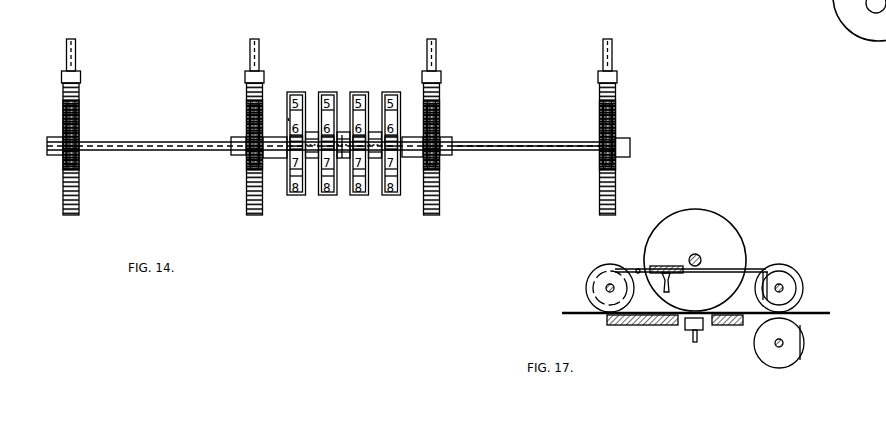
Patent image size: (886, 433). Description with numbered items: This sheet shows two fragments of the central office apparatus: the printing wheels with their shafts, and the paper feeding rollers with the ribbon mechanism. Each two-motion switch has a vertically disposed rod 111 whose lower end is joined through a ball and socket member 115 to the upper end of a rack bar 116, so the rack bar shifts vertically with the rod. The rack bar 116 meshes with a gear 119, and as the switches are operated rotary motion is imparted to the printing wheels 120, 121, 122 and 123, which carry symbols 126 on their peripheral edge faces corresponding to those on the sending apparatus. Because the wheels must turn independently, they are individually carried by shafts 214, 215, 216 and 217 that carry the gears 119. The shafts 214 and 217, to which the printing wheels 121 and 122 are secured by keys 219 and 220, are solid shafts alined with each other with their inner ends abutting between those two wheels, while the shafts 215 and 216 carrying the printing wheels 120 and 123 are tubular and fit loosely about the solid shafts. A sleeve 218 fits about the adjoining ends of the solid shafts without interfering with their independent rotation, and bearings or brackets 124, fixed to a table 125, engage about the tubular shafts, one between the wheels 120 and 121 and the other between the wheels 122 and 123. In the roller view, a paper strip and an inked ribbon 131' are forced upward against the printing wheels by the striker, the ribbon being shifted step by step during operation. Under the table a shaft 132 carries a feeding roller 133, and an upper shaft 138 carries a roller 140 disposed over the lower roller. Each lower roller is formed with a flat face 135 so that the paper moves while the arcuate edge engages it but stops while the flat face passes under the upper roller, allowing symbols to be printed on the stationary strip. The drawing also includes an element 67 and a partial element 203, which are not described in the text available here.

In FIG. 14, the vertically disposed rod 111 is at (76, 52).
In FIG. 14, the ball and socket member 115 is at (61, 77).
In FIG. 14, the rack bar 116 is at (63, 190).
In FIG. 14, the gear 119 is at (79, 116).
In FIG. 14, the printing wheel 120 is at (293, 92).
In FIG. 14, the printing wheel 121 is at (329, 92).
In FIG. 14, the printing wheel 122 is at (360, 92).
In FIG. 14, the printing wheel 123 is at (392, 92).
In FIG. 17, the printing wheel 123 is at (728, 222).
In FIG. 14, the bracket 124 is at (311, 133).
In FIG. 14, the symbols 126 is at (290, 118).
In FIG. 14, the solid shaft 214 is at (166, 147).
In FIG. 14, the tubular shaft 215 is at (290, 151).
In FIG. 14, the tubular shaft 216 is at (430, 150).
In FIG. 14, the solid shaft 217 is at (512, 148).
In FIG. 14, the sleeve 218 is at (342, 140).
In FIG. 14, the key 219 is at (323, 135).
In FIG. 14, the key 220 is at (366, 150).
In FIG. 17, the tape 67 is at (782, 266).
In FIG. 17, the table 125 is at (660, 328).
In FIG. 17, the inked ribbon 131' is at (696, 307).
In FIG. 17, the shaft 132 is at (783, 342).
In FIG. 17, the roller 133 is at (755, 348).
In FIG. 17, the flat face 135 is at (802, 352).
In FIG. 17, the upper shaft 138 is at (783, 288).
In FIG. 17, the roller 140 is at (803, 283).
In FIG. 17, the wheel 203 is at (840, 17).